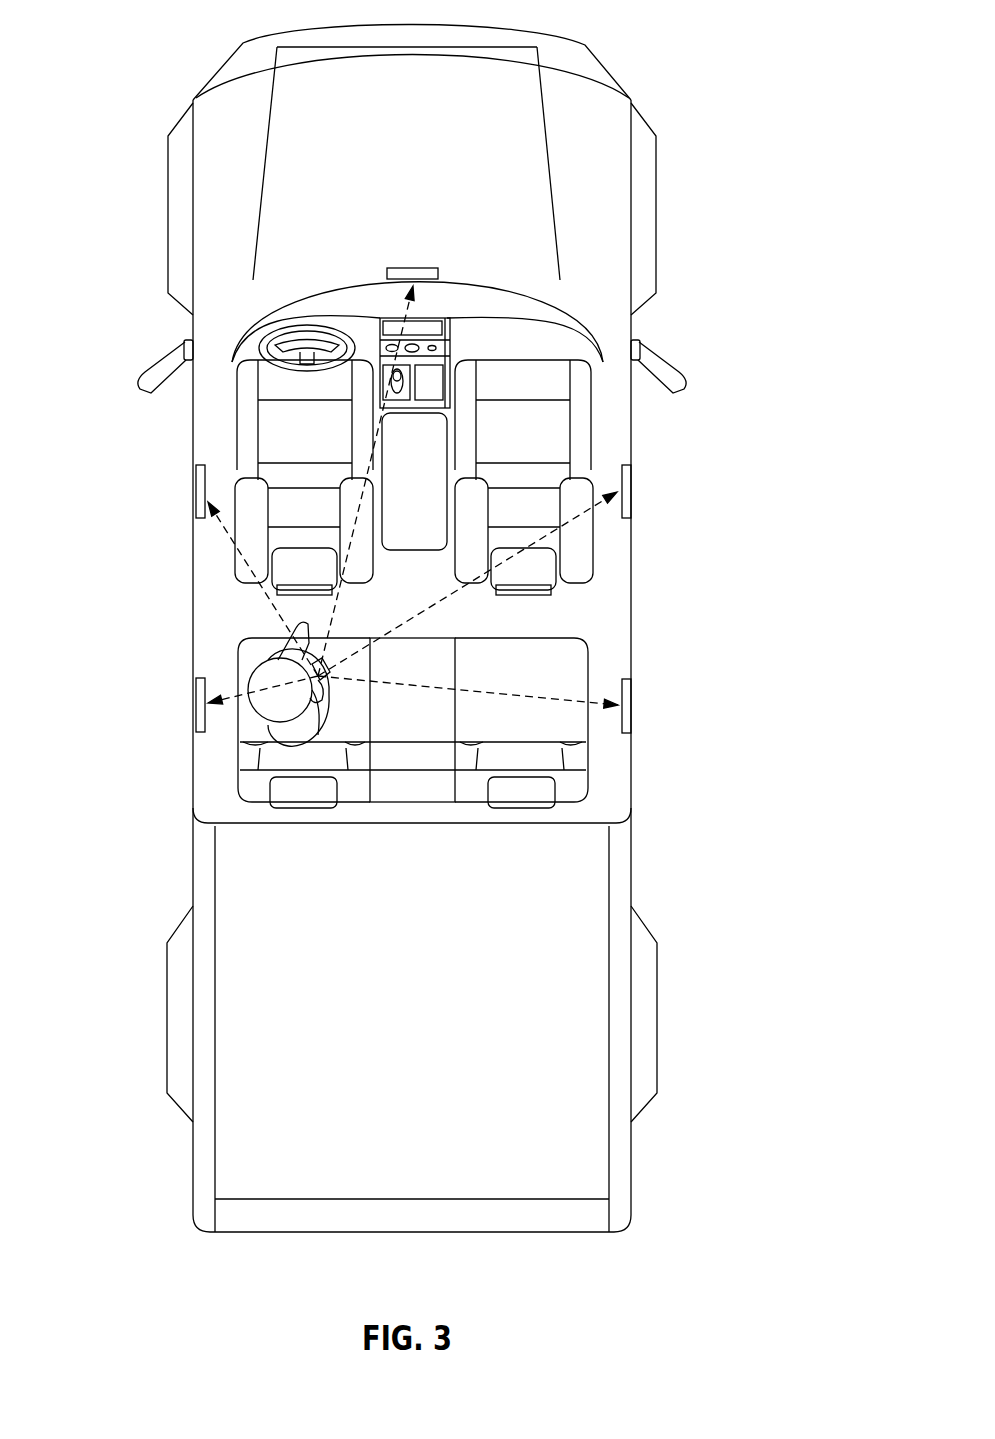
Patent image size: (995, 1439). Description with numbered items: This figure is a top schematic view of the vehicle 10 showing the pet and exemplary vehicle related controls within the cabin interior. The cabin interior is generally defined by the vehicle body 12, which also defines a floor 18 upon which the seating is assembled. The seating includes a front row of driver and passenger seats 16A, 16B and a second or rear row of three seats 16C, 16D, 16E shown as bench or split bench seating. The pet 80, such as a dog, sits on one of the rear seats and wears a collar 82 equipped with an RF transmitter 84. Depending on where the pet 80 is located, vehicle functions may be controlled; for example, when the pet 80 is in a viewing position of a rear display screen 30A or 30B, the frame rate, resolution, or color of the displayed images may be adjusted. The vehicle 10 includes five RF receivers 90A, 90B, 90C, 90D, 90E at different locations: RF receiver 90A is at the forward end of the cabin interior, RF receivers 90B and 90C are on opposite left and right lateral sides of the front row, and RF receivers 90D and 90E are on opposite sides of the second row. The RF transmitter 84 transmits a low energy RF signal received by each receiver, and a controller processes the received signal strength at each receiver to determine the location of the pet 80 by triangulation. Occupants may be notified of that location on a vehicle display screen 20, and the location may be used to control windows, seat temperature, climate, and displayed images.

The vehicle 10 is at (624, 46).
The vehicle body 12 is at (632, 532).
The driver seat 16A is at (283, 432).
The passenger seat 16B is at (547, 427).
The rear seat 16C is at (246, 649).
The rear seat 16D is at (438, 780).
The rear seat 16E is at (565, 660).
The floor 18 is at (239, 588).
The vehicle display screen 20 is at (380, 326).
The rear display screen 30A is at (260, 606).
The rear display screen 30B is at (562, 609).
The pet 80 is at (270, 743).
The collar 82 is at (318, 683).
The RF transmitter 84 is at (327, 680).
The RF receiver 90A is at (413, 267).
The RF receiver 90B is at (197, 482).
The RF receiver 90C is at (627, 487).
The RF receiver 90D is at (197, 713).
The RF receiver 90E is at (627, 713).